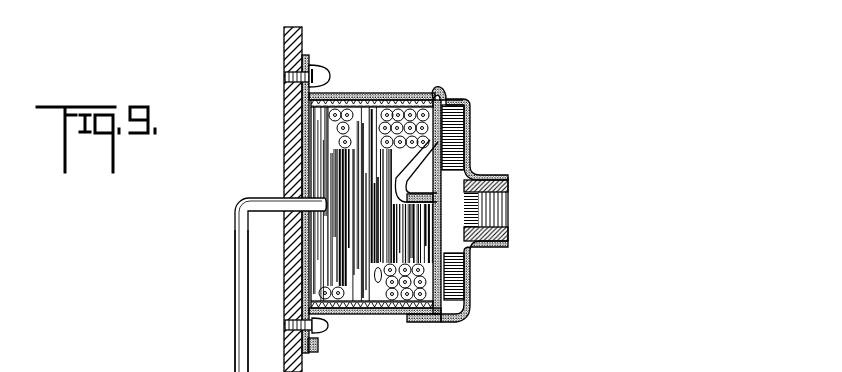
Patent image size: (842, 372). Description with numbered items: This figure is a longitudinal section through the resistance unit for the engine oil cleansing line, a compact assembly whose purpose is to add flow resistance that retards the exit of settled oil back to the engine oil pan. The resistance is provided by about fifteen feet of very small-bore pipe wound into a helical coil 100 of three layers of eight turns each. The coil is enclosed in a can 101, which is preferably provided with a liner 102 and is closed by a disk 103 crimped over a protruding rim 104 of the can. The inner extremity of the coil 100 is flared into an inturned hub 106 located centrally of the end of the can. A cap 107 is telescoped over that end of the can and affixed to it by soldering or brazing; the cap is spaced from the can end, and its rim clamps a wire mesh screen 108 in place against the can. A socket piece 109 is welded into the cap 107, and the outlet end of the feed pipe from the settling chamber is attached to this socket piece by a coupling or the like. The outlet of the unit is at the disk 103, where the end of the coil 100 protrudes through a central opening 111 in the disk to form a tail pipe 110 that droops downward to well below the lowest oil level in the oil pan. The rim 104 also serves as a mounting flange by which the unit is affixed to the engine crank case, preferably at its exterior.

The helical coil 100 is at (362, 308).
The can 101 is at (353, 96).
The liner 102 is at (389, 96).
The disk 103 is at (300, 161).
The protruding rim 104 is at (323, 68).
The inturned hub 106 is at (427, 185).
The cap 107 is at (465, 113).
The wire mesh screen 108 is at (453, 108).
The socket piece 109 is at (498, 178).
The tail pipe 110 is at (236, 307).
The central opening 111 is at (302, 198).